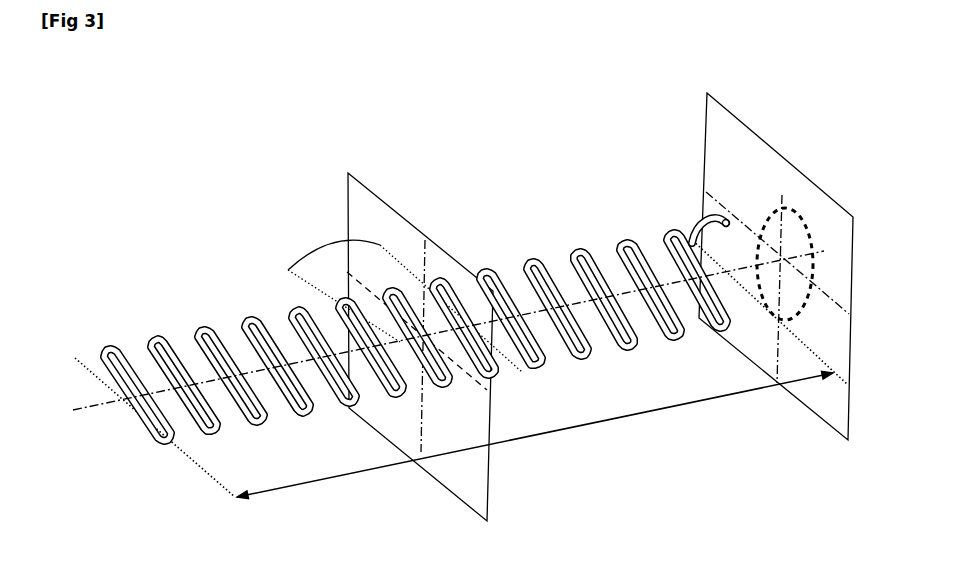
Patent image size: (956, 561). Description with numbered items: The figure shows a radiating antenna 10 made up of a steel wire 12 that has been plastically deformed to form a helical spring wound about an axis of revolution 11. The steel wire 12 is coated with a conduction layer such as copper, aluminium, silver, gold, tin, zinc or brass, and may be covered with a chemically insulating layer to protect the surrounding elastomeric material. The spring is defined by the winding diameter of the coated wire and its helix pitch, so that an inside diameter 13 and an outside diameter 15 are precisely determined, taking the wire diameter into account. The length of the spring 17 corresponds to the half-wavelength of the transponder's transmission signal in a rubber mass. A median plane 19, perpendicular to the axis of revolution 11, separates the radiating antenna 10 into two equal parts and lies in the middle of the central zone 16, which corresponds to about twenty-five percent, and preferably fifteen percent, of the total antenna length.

The radiating antenna 10 is at (417, 281).
The axis of revolution 11 is at (99, 418).
The steel wire 12 is at (266, 310).
The inside diameter 13 is at (758, 213).
The outside diameter 15 is at (780, 190).
The central zone 16 is at (322, 247).
The length of the spring 17 is at (695, 412).
The median plane 19 is at (500, 495).